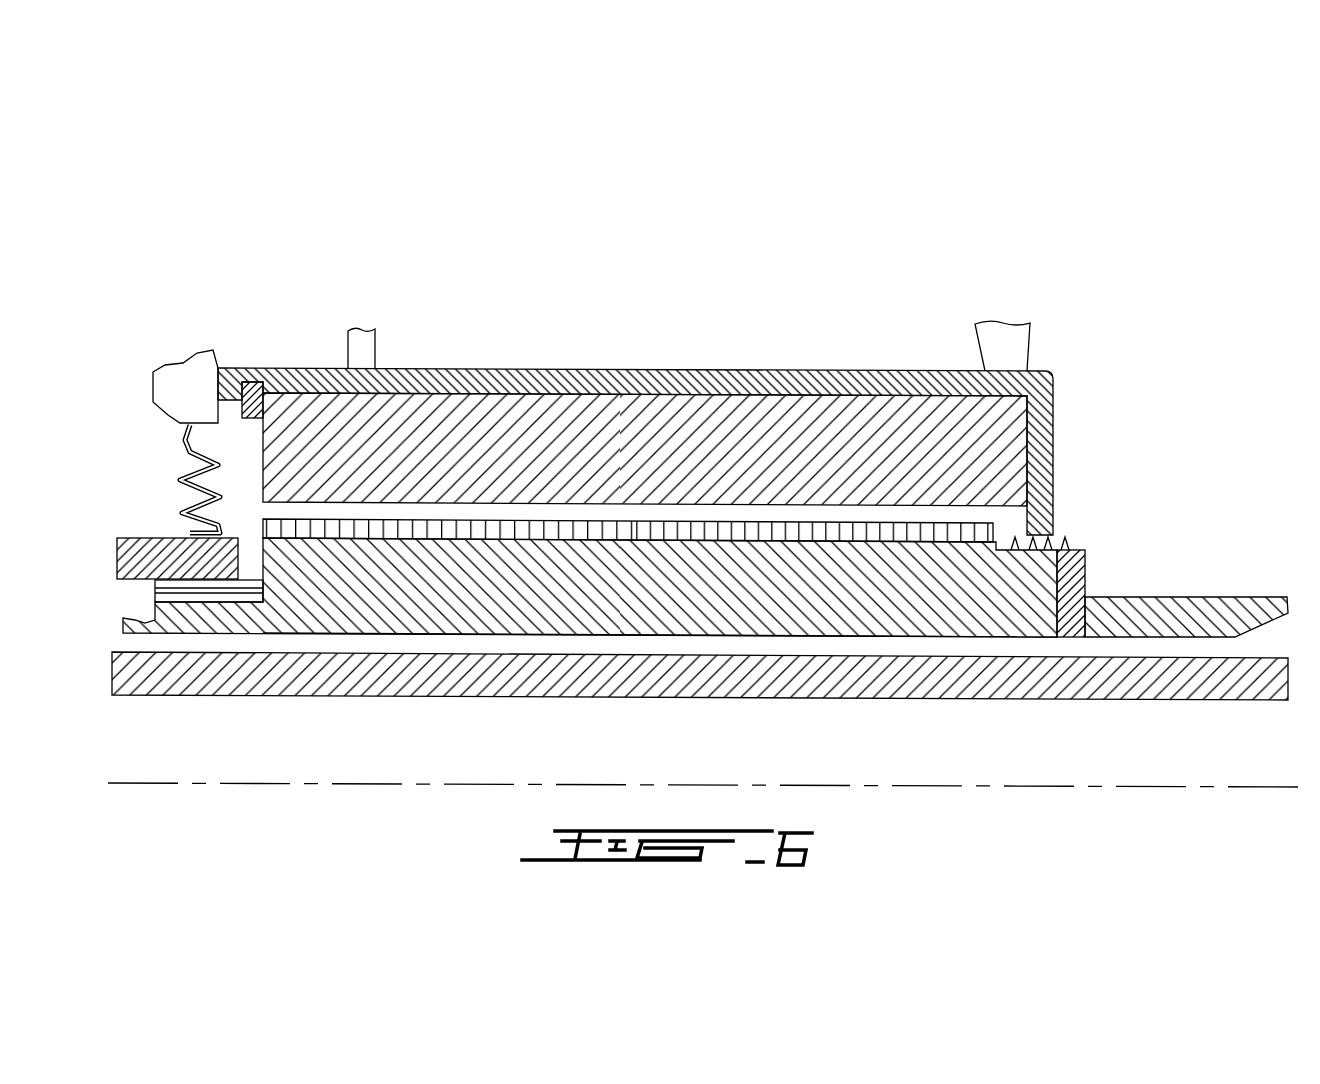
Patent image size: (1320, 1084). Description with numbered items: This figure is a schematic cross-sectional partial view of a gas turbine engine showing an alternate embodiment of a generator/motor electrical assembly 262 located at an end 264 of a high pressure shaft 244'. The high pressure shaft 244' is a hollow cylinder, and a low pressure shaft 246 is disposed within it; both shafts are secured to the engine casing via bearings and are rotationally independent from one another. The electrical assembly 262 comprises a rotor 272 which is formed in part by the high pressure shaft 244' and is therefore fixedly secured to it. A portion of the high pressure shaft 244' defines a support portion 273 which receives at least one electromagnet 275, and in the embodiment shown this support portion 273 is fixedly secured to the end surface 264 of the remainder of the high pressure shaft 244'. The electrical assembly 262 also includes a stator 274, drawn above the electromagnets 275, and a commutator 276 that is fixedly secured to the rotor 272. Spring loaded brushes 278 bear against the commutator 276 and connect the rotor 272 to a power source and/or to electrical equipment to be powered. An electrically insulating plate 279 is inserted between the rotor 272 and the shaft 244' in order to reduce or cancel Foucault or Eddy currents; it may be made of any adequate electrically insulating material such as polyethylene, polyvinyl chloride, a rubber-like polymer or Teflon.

The generator/motor electrical assembly 262 is at (475, 277).
The end surface of the high pressure shaft 264 is at (1075, 525).
The high pressure shaft 244' is at (1186, 566).
The low pressure shaft 246 is at (1160, 677).
The rotor 272 is at (608, 640).
The support portion 273 is at (463, 597).
The stator 274 is at (700, 437).
The electromagnet 275 is at (762, 527).
The commutator 276 is at (210, 590).
The spring loaded brushes 278 is at (150, 558).
The electrically insulating plate 279 is at (1070, 618).